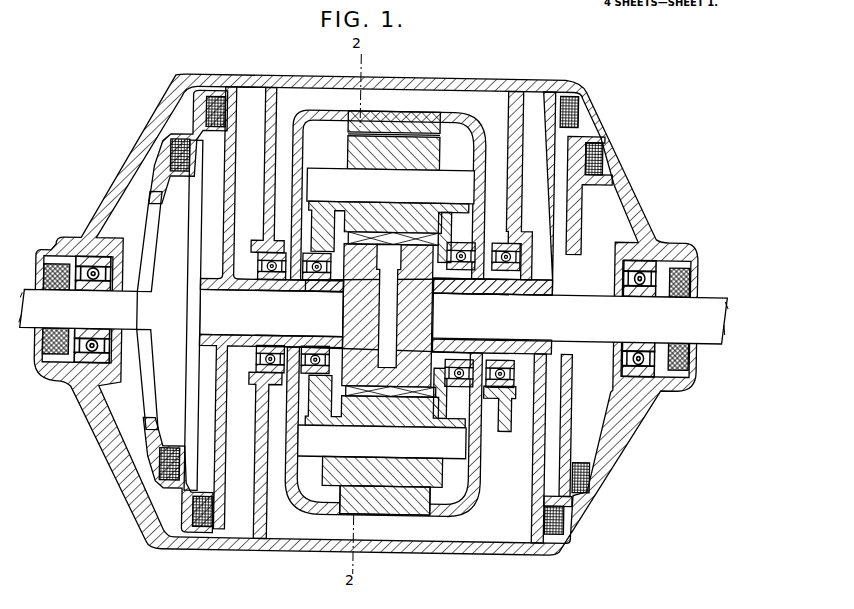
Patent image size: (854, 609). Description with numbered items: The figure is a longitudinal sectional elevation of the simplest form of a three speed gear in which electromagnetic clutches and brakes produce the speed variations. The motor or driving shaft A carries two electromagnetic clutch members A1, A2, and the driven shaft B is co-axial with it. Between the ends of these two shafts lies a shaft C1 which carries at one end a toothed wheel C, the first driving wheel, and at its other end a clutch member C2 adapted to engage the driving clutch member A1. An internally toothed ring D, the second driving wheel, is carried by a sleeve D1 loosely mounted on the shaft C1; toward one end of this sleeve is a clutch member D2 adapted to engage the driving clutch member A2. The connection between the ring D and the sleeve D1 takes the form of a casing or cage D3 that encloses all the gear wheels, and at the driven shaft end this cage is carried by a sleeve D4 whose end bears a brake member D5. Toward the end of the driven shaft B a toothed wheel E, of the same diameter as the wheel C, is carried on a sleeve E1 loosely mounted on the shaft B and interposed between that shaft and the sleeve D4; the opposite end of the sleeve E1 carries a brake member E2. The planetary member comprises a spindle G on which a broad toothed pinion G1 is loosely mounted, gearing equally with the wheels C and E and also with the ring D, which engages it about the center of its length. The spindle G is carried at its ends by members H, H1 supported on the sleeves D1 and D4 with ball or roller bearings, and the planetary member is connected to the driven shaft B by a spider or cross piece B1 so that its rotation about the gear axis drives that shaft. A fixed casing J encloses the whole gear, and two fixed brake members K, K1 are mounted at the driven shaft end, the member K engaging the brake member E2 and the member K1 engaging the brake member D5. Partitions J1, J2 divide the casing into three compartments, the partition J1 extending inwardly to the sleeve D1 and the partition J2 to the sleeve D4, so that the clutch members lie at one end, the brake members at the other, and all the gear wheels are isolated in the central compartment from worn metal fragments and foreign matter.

The driving shaft A is at (78, 309).
The clutch member A1 is at (160, 470).
The clutch member A2 is at (195, 510).
The driven shaft B is at (581, 318).
The spider or cross piece B1 is at (390, 328).
The toothed wheel C is at (324, 298).
The shaft C1 is at (272, 312).
The clutch member C2 is at (190, 255).
The internally toothed ring D is at (403, 122).
The sleeve D1 is at (242, 250).
The clutch member D2 is at (248, 84).
The casing or cage D3 is at (452, 130).
The sleeve D4 is at (552, 258).
The brake member D5 is at (580, 139).
The toothed wheel E is at (438, 362).
The sleeve E1 is at (492, 347).
The brake member E2 is at (574, 437).
The spindle G is at (381, 470).
The broad toothed pinion G1 is at (425, 500).
The end member H is at (332, 230).
The end member H1 is at (452, 227).
The fixed casing J is at (403, 82).
The partition J1 is at (256, 510).
The partition J2 is at (538, 556).
The brake member K is at (604, 152).
The brake member K1 is at (579, 97).